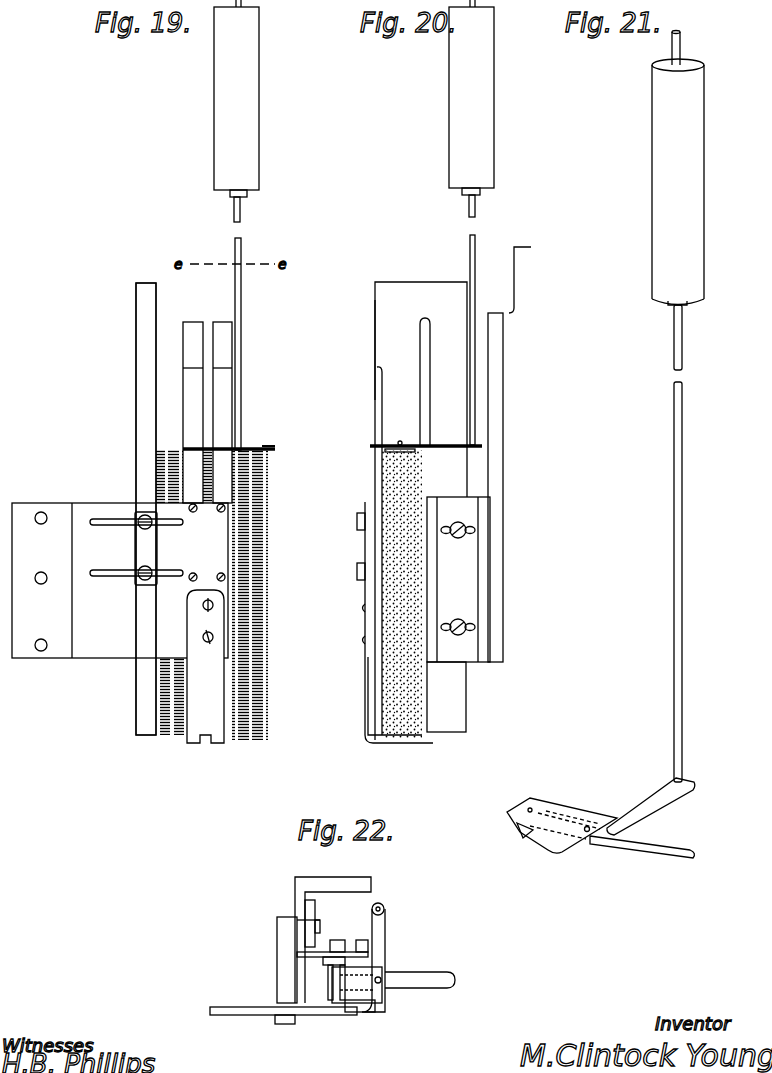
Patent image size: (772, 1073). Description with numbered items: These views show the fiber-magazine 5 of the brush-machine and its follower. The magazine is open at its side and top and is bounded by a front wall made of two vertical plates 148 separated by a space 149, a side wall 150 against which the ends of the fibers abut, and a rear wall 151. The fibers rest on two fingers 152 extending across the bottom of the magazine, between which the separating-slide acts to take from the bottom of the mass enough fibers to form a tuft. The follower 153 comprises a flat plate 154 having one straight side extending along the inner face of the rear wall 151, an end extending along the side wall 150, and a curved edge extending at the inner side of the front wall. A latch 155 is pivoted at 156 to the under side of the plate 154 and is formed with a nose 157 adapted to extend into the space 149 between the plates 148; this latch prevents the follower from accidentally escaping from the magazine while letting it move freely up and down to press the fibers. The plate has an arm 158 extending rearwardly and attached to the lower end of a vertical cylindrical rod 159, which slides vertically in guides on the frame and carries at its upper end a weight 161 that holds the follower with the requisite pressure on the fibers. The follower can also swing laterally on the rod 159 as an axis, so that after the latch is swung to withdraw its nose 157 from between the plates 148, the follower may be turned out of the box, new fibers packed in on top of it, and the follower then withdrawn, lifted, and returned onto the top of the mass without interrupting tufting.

In FIG. 19, the fiber-magazine 5 is at (136, 509).
In FIG. 20, the fiber-magazine 5 is at (360, 350).
In FIG. 19, the vertical plates 148 is at (195, 407).
In FIG. 22, the vertical plates 148 is at (372, 1010).
In FIG. 19, the space 149 is at (205, 326).
In FIG. 22, the space 149 is at (345, 1012).
In FIG. 19, the side wall 150 is at (136, 408).
In FIG. 20, the side wall 150 is at (421, 511).
In FIG. 22, the side wall 150 is at (280, 953).
In FIG. 20, the rear wall 151 is at (430, 391).
In FIG. 22, the rear wall 151 is at (318, 947).
In FIG. 19, the fingers 152 is at (212, 745).
In FIG. 20, the fingers 152 is at (390, 743).
In FIG. 20, the follower 153 is at (396, 551).
In FIG. 19, the flat plate 154 is at (242, 447).
In FIG. 20, the flat plate 154 is at (375, 447).
In FIG. 21, the flat plate 154 is at (527, 798).
In FIG. 22, the flat plate 154 is at (385, 997).
In FIG. 19, the latch 155 is at (273, 452).
In FIG. 21, the latch 155 is at (680, 842).
In FIG. 22, the latch 155 is at (457, 979).
In FIG. 21, the pivot 156 is at (588, 832).
In FIG. 22, the pivot 156 is at (382, 978).
In FIG. 21, the nose 157 is at (518, 828).
In FIG. 22, the nose 157 is at (300, 1000).
In FIG. 20, the arm 158 is at (484, 448).
In FIG. 21, the arm 158 is at (651, 800).
In FIG. 22, the arm 158 is at (386, 932).
In FIG. 19, the vertical cylindrical rod 159 is at (242, 302).
In FIG. 20, the vertical cylindrical rod 159 is at (476, 353).
In FIG. 21, the vertical cylindrical rod 159 is at (683, 462).
In FIG. 22, the vertical cylindrical rod 159 is at (384, 907).
In FIG. 19, the weight 161 is at (236, 111).
In FIG. 20, the weight 161 is at (471, 108).
In FIG. 21, the weight 161 is at (678, 168).